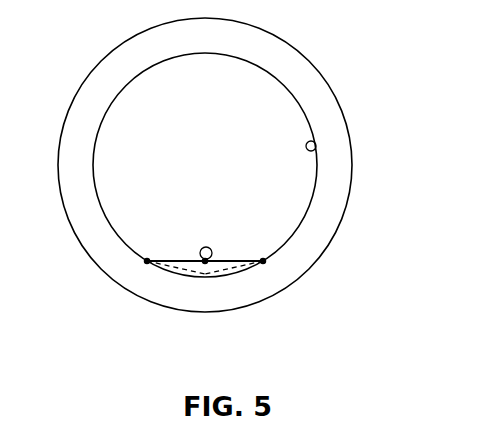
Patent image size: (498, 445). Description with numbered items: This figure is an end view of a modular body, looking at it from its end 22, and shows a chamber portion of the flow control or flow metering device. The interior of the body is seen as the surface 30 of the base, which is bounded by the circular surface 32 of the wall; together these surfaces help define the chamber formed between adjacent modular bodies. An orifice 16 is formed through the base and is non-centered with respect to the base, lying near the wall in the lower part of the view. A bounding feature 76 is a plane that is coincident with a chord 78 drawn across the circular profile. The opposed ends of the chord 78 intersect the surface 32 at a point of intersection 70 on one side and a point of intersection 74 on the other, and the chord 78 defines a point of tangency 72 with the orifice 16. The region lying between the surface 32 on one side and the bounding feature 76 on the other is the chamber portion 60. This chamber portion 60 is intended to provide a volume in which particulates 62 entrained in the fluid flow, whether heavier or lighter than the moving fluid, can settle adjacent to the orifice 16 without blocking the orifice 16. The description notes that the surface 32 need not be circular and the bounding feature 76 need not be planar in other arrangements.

The orifice 16 is at (207, 247).
The end 22 is at (315, 98).
The surface 30 is at (221, 122).
The surface 32 is at (316, 149).
The chamber portion 60 is at (166, 266).
The particulates 62 is at (203, 263).
The point of intersection 70 is at (147, 261).
The point of tangency 72 is at (207, 263).
The point of intersection 74 is at (264, 262).
The bounding feature 76 is at (155, 258).
The chord 78 is at (180, 258).